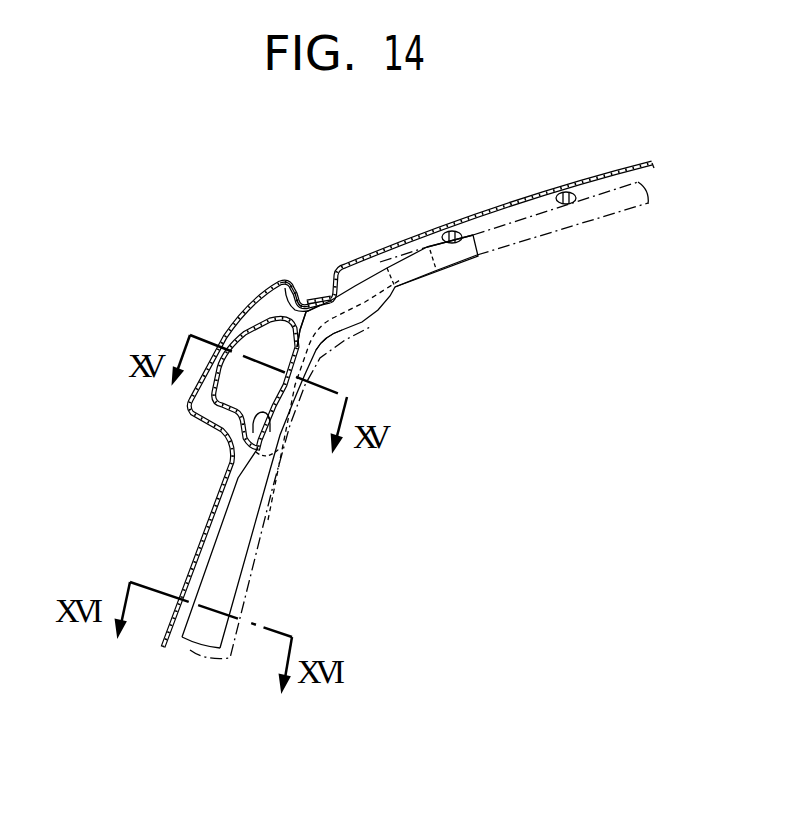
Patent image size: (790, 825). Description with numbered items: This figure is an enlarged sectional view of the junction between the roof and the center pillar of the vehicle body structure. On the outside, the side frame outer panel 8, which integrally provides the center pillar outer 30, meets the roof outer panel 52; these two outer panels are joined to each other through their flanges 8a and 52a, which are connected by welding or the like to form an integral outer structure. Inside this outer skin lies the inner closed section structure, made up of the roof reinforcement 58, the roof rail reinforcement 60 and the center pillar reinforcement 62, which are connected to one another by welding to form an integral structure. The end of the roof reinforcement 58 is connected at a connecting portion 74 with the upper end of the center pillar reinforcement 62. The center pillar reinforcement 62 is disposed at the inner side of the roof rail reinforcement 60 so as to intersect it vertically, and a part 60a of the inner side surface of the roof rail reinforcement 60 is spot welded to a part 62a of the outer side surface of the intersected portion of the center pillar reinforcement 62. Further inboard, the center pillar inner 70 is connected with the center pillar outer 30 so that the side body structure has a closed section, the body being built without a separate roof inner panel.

The side frame outer panel 8 is at (207, 435).
The center pillar outer 30 is at (228, 505).
The flange 8a is at (283, 281).
The roof outer panel 52 is at (468, 214).
The flange 52a is at (315, 295).
The roof reinforcement 58 is at (532, 228).
The roof rail reinforcement 60 is at (253, 333).
The part of the inner side surface of the roof rail reinforcement 60a is at (267, 433).
The center pillar reinforcement 62 is at (247, 511).
The part of the outer side surface of the center pillar reinforcement 62a is at (300, 337).
The center pillar inner 70 is at (253, 573).
The connecting portion 74 is at (418, 286).